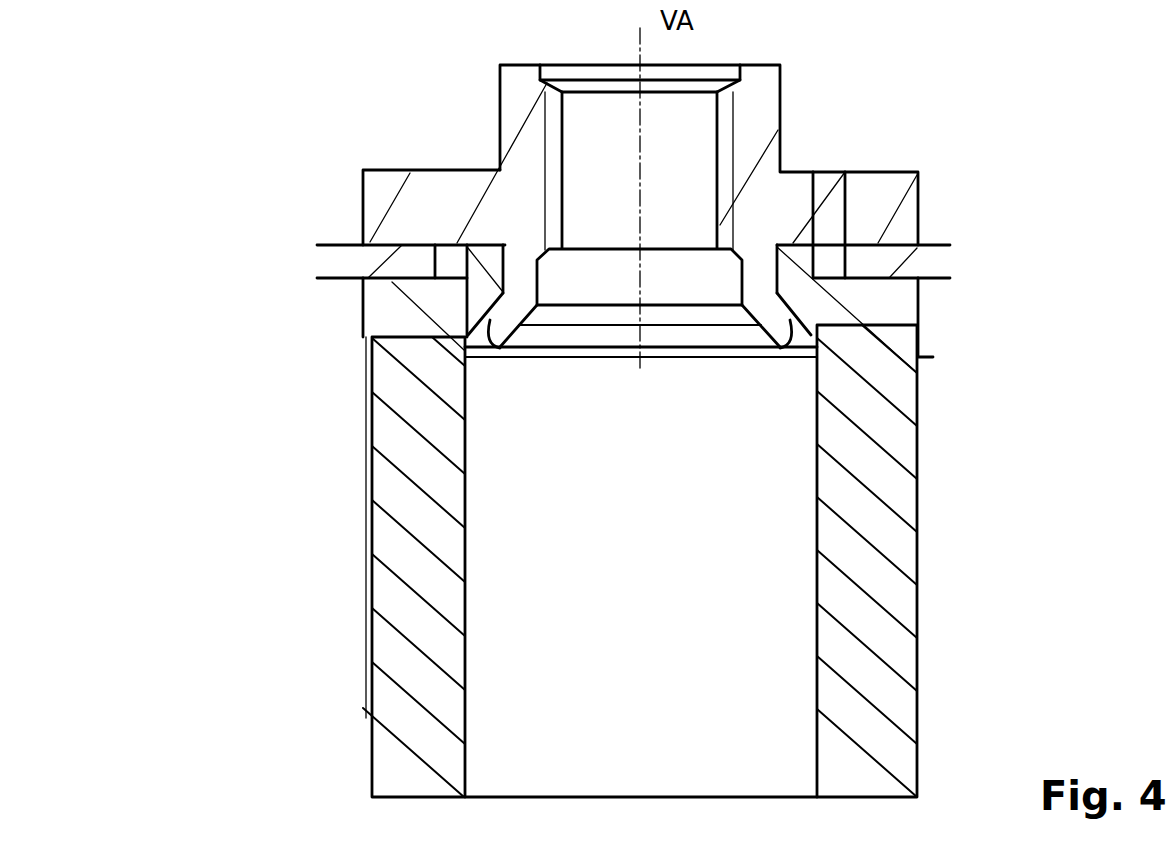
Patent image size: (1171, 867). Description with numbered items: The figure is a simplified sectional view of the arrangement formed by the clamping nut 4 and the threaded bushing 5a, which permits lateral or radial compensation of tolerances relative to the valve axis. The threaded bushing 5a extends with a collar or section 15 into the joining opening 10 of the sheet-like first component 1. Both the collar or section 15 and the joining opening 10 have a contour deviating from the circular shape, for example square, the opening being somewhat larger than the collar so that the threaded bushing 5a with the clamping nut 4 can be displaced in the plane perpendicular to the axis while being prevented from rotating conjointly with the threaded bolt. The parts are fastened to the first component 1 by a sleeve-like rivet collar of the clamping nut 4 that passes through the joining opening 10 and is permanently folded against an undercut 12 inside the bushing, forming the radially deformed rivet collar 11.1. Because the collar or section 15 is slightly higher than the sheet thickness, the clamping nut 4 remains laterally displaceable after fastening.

The first component 1 is at (332, 257).
The clamping nut 4 is at (765, 128).
The threaded bushing 5a is at (900, 446).
The joining opening 10 is at (447, 257).
The radially deformed rivet collar 11.1 is at (512, 330).
The undercut 12 is at (498, 307).
The collar or section 15 is at (481, 257).